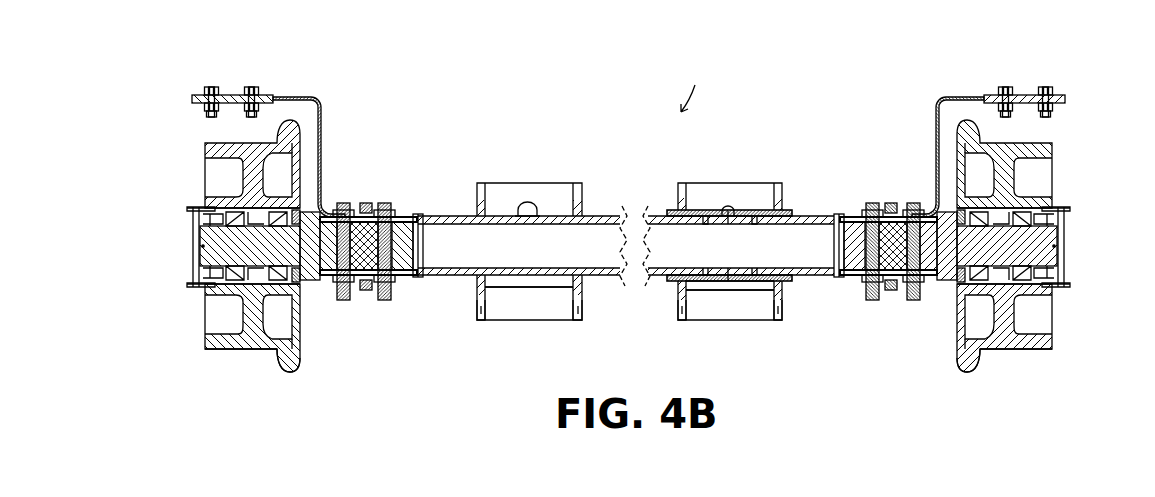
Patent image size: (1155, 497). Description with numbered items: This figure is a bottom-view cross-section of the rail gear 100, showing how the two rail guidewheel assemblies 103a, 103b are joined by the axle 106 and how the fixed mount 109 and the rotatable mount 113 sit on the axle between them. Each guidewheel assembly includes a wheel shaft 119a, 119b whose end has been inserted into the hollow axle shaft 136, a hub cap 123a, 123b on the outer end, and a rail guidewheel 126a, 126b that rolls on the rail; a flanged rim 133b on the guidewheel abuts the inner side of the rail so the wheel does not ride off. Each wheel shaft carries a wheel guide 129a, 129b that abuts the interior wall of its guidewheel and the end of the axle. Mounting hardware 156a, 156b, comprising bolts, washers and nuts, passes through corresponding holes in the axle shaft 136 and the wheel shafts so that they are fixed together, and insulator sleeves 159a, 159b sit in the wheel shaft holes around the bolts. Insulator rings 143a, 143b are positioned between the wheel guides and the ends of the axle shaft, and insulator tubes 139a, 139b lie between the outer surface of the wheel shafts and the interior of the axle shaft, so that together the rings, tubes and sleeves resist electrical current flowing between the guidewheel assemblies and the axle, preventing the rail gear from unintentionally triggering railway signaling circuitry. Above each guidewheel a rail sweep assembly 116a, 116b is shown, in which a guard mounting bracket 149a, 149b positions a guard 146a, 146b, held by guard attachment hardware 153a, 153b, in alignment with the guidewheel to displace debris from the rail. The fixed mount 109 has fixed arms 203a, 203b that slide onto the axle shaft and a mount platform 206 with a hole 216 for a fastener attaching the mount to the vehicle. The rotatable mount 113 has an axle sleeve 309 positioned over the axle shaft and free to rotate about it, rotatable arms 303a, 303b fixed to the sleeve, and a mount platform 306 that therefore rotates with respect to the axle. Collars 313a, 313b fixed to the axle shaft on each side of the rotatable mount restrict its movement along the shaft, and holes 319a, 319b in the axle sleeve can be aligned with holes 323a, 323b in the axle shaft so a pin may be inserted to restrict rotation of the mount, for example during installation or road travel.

The rail gear 100 is at (700, 88).
The rail guidewheel assembly 103a is at (205, 145).
The rail guidewheel assembly 103b is at (1053, 145).
The axle 106 is at (462, 215).
The fixed mount 109 is at (522, 183).
The rotatable mount 113 is at (735, 183).
The rail sweep assembly 116a is at (204, 89).
The rail sweep assembly 116b is at (1060, 89).
The wheel shaft 119a is at (220, 247).
The wheel shaft 119b is at (1040, 247).
The hub cap 123a is at (190, 228).
The hub cap 123b is at (1068, 228).
The rail guidewheel 126a is at (247, 351).
The rail guidewheel 126b is at (1009, 351).
The wheel guide 129a is at (305, 290).
The wheel guide 129b is at (950, 290).
The flanged rim 133b is at (290, 372).
The axle shaft 136 is at (604, 277).
The insulator tube 139a is at (419, 278).
The insulator tube 139b is at (838, 278).
The insulator ring 143a is at (325, 283).
The insulator ring 143b is at (932, 283).
The guard 146a is at (240, 95).
The guard 146b is at (1020, 95).
The guard mounting bracket 149a is at (318, 102).
The guard mounting bracket 149b is at (940, 102).
The guard attachment hardware 153a is at (251, 118).
The guard attachment hardware 153b is at (1006, 118).
The mounting hardware 156a is at (381, 203).
The mounting hardware 156b is at (913, 203).
The insulator sleeve 159a is at (390, 213).
The insulator sleeve 159b is at (866, 213).
The fixed arm 203a is at (480, 320).
The fixed arm 203b is at (577, 320).
The mount platform 206 is at (543, 316).
The hole 216 is at (531, 205).
The rotatable arm 303a is at (682, 320).
The rotatable arm 303b is at (778, 320).
The mount platform 306 is at (747, 316).
The axle sleeve 309 is at (762, 283).
The collar 313a is at (672, 210).
The collar 313b is at (786, 210).
The hole 319a is at (706, 220).
The hole 319b is at (706, 275).
The hole 323a is at (756, 220).
The hole 323b is at (756, 276).